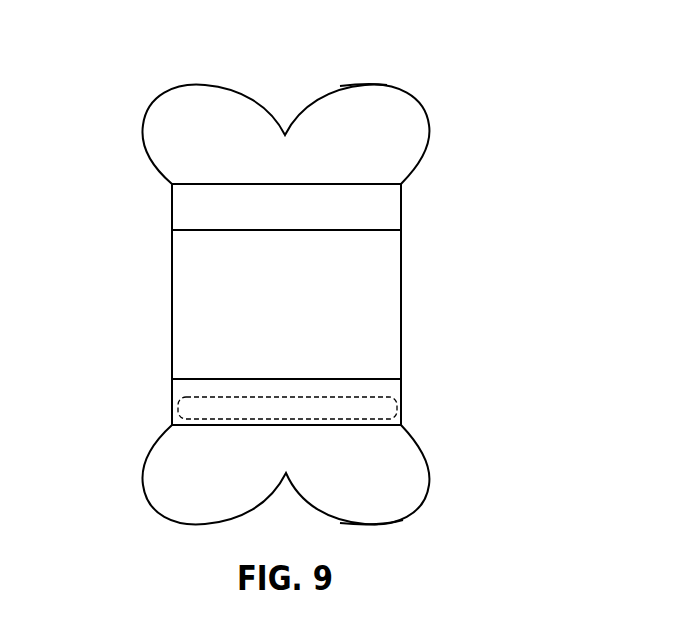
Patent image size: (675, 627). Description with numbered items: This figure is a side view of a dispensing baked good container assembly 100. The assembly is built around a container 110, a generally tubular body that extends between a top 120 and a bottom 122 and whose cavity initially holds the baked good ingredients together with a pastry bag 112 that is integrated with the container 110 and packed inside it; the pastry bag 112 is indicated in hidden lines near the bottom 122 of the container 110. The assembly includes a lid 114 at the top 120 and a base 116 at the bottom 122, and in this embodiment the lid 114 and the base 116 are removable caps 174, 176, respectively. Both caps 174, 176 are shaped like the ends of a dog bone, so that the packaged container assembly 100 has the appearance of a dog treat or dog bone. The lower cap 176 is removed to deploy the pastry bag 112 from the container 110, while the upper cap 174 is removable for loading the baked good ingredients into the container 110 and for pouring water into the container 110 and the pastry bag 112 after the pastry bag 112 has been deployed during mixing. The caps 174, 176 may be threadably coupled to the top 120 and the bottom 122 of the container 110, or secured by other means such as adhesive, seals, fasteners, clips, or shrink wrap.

The container assembly 100 is at (500, 128).
The container 110 is at (388, 296).
The pastry bag 112 is at (403, 400).
The lid 114 is at (427, 150).
The base 116 is at (425, 472).
The top 120 is at (203, 184).
The bottom 122 is at (197, 425).
The cap 174 is at (387, 85).
The cap 176 is at (403, 520).